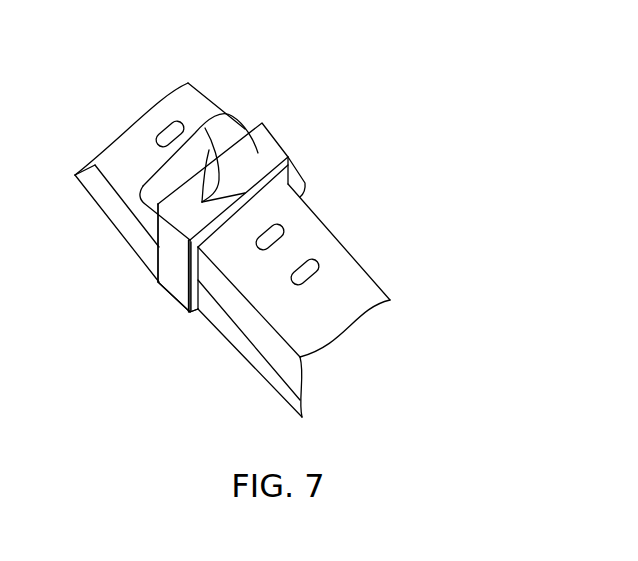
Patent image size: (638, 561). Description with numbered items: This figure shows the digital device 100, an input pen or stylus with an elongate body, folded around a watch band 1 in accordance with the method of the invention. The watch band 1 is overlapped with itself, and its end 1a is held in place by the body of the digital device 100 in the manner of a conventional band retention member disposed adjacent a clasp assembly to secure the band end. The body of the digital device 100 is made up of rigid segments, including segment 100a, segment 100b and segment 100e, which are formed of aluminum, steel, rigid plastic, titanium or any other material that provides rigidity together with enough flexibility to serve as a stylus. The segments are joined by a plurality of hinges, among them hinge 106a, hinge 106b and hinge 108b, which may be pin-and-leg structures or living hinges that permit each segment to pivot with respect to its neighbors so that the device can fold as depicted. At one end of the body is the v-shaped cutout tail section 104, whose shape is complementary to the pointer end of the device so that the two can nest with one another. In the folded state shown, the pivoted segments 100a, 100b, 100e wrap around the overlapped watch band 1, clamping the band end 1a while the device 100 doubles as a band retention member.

The watch band 1 is at (398, 317).
The end of the watch band 1a is at (229, 113).
The digital device 100 is at (314, 118).
The segment 100a is at (160, 210).
The segment 100b is at (170, 265).
The segment 100e is at (258, 156).
The v-shaped cutout tail section 104 is at (216, 150).
The hinge 106a is at (188, 214).
The hinge 106b is at (190, 317).
The hinge 108b is at (292, 158).